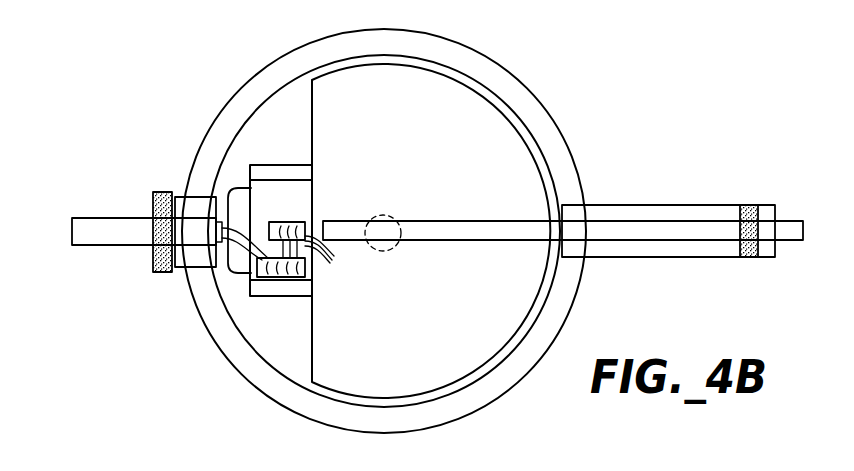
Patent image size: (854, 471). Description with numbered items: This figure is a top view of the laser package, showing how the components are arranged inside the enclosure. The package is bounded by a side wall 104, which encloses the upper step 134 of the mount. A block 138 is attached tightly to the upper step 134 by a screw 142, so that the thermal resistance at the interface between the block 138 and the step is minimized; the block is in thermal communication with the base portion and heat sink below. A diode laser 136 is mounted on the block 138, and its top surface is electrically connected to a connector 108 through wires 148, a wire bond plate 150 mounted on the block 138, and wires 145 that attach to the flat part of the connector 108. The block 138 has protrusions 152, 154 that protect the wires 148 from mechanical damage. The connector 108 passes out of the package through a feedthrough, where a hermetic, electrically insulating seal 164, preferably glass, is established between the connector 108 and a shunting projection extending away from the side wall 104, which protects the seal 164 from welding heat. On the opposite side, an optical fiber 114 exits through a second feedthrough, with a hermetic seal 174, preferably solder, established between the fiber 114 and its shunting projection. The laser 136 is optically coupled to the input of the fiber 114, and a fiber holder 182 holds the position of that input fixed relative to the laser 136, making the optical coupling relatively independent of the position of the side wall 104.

The side wall 104 is at (579, 292).
The upper step 134 is at (457, 97).
The optical fiber 114 is at (505, 220).
The hermetic seal 174 is at (752, 205).
The fiber holder 182 is at (383, 214).
The connector 108 is at (140, 217).
The hermetic electrically insulating seal 164 is at (150, 249).
The screw 142 is at (236, 268).
The block 138 is at (282, 165).
The protrusion 154 is at (250, 175).
The protrusion 152 is at (292, 288).
The diode laser 136 is at (278, 222).
The wire bond plate 150 is at (270, 278).
The wires 145 is at (261, 262).
The wires 148 is at (326, 258).